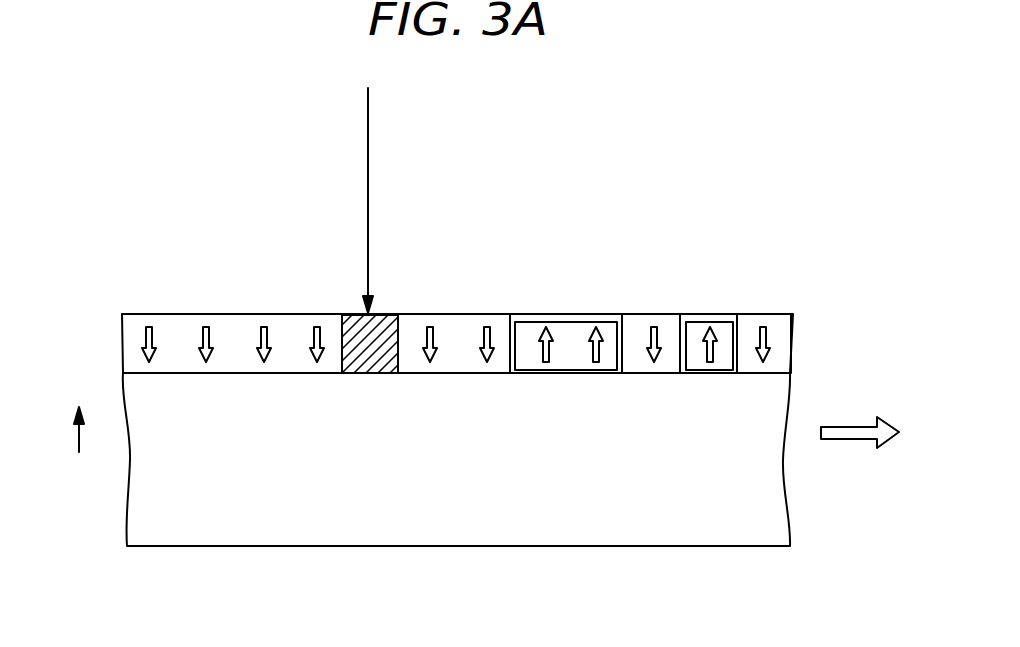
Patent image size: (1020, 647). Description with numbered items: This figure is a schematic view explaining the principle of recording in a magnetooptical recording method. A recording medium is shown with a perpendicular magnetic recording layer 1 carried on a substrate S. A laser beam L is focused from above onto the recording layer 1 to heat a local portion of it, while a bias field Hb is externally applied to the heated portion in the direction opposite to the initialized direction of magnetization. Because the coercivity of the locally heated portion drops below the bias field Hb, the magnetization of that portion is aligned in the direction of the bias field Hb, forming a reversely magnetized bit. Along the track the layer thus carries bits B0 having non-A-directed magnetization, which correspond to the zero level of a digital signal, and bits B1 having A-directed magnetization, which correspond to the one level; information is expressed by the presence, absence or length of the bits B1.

The recording layer 1 is at (780, 363).
The substrate S is at (740, 535).
The laser beam L is at (365, 185).
The bit having non-A-directed magnetization B0 is at (459, 313).
The bit having A-directed magnetization B1 is at (566, 313).
The bias field Hb is at (61, 429).